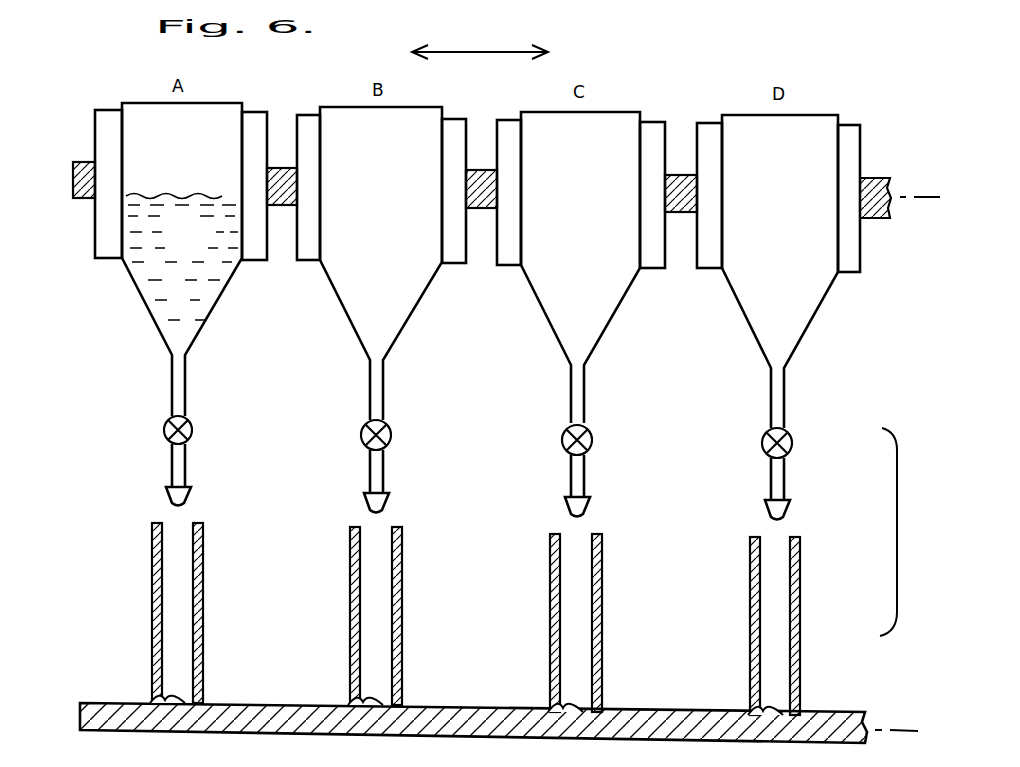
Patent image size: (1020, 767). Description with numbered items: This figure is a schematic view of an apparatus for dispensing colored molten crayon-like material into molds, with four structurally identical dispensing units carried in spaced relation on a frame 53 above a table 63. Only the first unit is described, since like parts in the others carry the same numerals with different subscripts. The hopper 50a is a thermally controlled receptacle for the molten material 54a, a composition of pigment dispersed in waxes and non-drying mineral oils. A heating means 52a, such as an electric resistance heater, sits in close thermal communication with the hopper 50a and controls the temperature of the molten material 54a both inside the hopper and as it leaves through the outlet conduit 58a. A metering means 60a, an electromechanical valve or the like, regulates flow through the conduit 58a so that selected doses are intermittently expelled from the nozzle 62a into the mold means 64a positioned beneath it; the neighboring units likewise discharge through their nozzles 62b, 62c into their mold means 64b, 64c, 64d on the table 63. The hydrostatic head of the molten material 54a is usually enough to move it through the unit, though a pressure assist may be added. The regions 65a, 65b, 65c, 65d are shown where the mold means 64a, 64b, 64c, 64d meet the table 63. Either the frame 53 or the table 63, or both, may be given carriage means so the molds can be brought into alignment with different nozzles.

The hopper 50a is at (117, 265).
The heating means 52a is at (98, 228).
The frame 53 is at (78, 160).
The molten material 54a is at (210, 241).
The outlet conduit 58a is at (175, 383).
The metering means 60a is at (192, 432).
The nozzle 62a is at (190, 495).
The nozzle 62b is at (390, 500).
The nozzle 62c is at (583, 505).
The table 63 is at (82, 704).
The mold means 64a is at (152, 541).
The mold means 64b is at (402, 546).
The mold means 64c is at (603, 549).
The mold means 64d is at (803, 551).
The weld fillet 65a is at (160, 700).
The weld fillet 65b is at (355, 703).
The weld fillet 65c is at (556, 710).
The weld fillet 65d is at (755, 713).